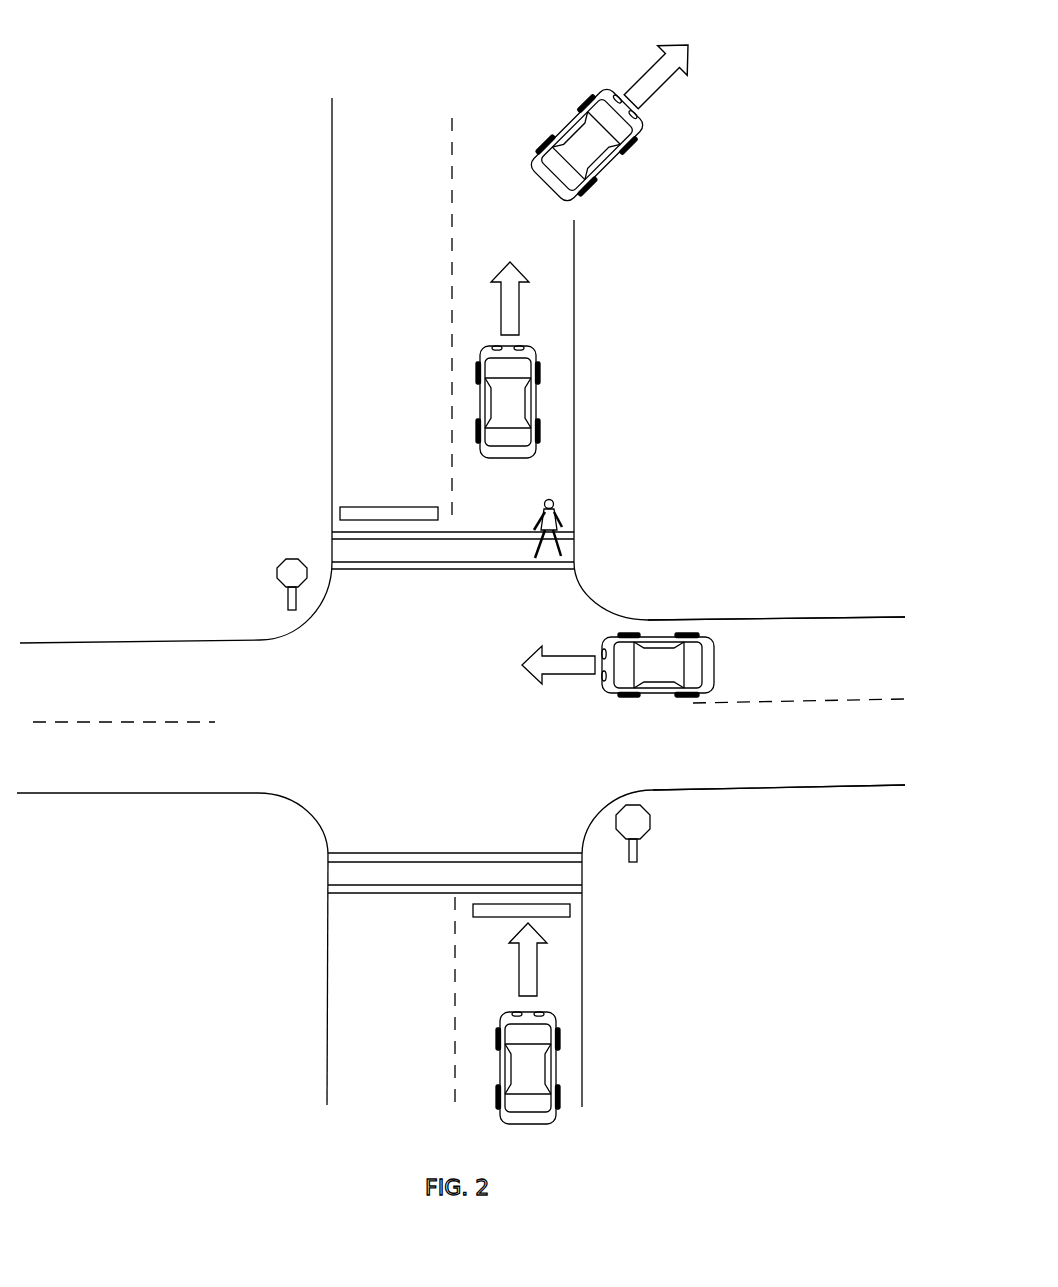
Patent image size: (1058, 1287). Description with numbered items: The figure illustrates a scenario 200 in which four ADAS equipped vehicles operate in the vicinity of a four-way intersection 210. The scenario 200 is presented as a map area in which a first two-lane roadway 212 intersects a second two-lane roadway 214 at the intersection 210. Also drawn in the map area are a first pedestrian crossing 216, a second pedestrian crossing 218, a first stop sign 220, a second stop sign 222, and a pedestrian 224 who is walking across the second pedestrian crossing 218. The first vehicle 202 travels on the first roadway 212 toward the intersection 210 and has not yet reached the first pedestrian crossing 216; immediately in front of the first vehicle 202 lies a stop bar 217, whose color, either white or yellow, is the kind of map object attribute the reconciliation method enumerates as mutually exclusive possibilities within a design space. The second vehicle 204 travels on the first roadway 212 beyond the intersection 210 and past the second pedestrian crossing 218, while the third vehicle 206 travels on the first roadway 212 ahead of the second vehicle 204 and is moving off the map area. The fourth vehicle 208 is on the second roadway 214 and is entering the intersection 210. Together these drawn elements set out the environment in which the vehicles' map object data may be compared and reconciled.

The scenario 200 is at (268, 212).
The first vehicle 202 is at (535, 1067).
The second vehicle 204 is at (506, 406).
The third vehicle 206 is at (588, 145).
The fourth vehicle 208 is at (656, 665).
The four-way intersection 210 is at (352, 675).
The first two-lane roadway 212 is at (378, 1042).
The second two-lane roadway 214 is at (855, 655).
The first pedestrian crossing 216 is at (558, 878).
The stop bar 217 is at (563, 917).
The second pedestrian crossing 218 is at (383, 552).
The first stop sign 220 is at (636, 830).
The second stop sign 222 is at (278, 570).
The pedestrian 224 is at (553, 536).